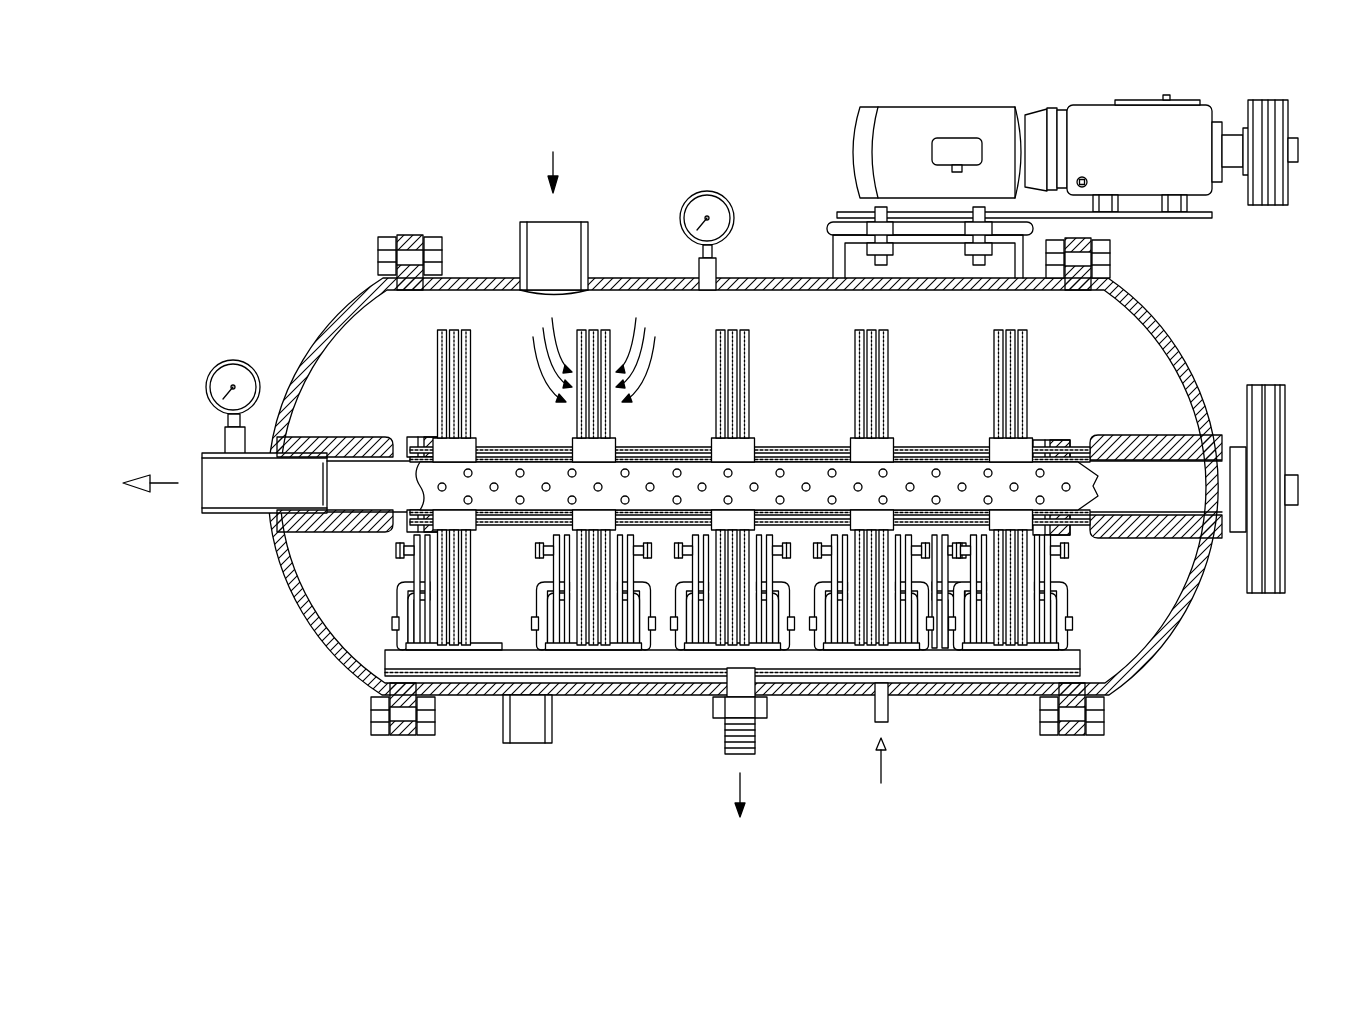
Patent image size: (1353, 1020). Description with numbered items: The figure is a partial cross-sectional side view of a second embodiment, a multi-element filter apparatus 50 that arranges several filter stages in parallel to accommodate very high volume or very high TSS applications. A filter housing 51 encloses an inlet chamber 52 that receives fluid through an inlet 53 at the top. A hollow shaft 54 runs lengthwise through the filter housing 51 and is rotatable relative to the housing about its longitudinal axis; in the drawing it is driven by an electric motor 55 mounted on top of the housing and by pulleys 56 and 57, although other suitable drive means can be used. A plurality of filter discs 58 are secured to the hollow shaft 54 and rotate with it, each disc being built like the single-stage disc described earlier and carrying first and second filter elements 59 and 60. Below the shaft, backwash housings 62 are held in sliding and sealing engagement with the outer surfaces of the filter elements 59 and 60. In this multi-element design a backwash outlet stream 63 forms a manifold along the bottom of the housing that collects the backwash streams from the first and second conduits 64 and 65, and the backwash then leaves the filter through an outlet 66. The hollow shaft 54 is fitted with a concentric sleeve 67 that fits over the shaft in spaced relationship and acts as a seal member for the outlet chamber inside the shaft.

The multi-element filter apparatus 50 is at (1268, 327).
The filter housing 51 is at (1172, 340).
The inlet chamber 52 is at (1111, 371).
The inlet 53 is at (572, 222).
The hollow shaft 54 is at (692, 470).
The electric motor 55 is at (1183, 100).
The pulley 56 is at (1290, 115).
The pulley 57 is at (1286, 425).
The filter discs 58 is at (469, 333).
The first filter element 59 is at (471, 402).
The second filter element 60 is at (438, 382).
The backwash housings 62 is at (412, 572).
The backwash outlet stream 63 is at (618, 662).
The first conduit 64 is at (408, 598).
The second conduit 65 is at (490, 640).
The outlet 66 is at (752, 753).
The concentric sleeve 67 is at (772, 450).